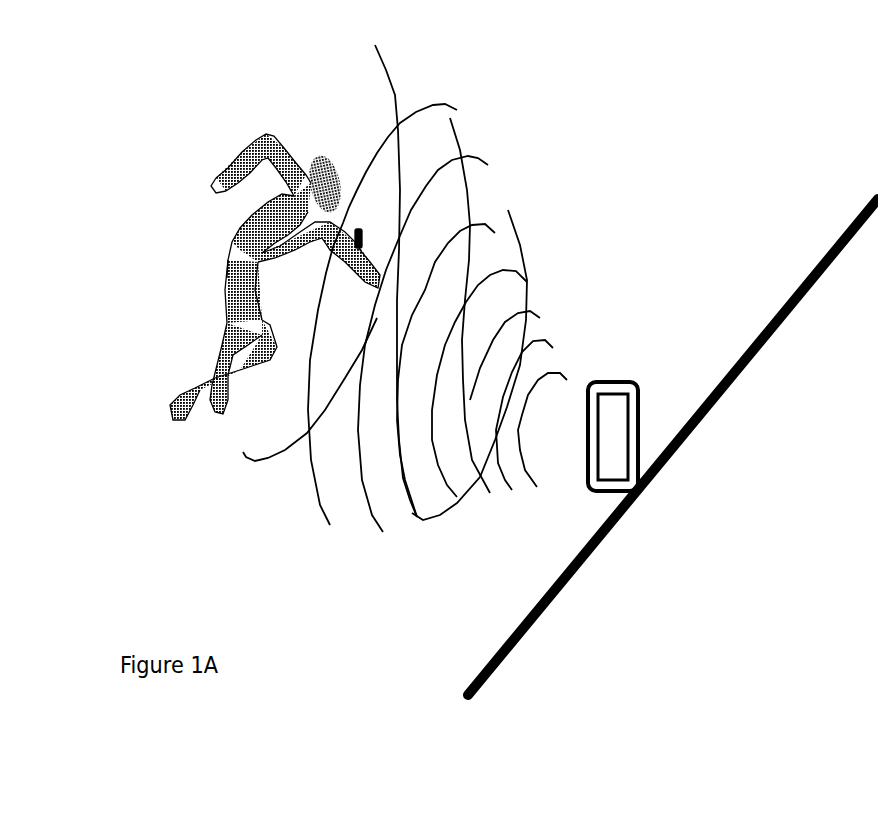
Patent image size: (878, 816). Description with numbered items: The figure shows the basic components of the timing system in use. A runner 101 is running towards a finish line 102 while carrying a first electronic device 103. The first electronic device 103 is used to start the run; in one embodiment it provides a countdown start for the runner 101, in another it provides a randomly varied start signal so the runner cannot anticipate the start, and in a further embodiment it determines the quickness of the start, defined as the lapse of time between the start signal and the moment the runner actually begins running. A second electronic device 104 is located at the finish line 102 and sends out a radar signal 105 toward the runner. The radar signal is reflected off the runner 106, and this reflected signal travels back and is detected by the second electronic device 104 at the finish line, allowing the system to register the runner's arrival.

The runner 101 is at (277, 124).
The finish line 102 is at (866, 183).
The first electronic device 103 is at (366, 221).
The second electronic device 104 is at (623, 372).
The radar signal 105 is at (563, 357).
The radar signal reflected off the runner 106 is at (409, 92).